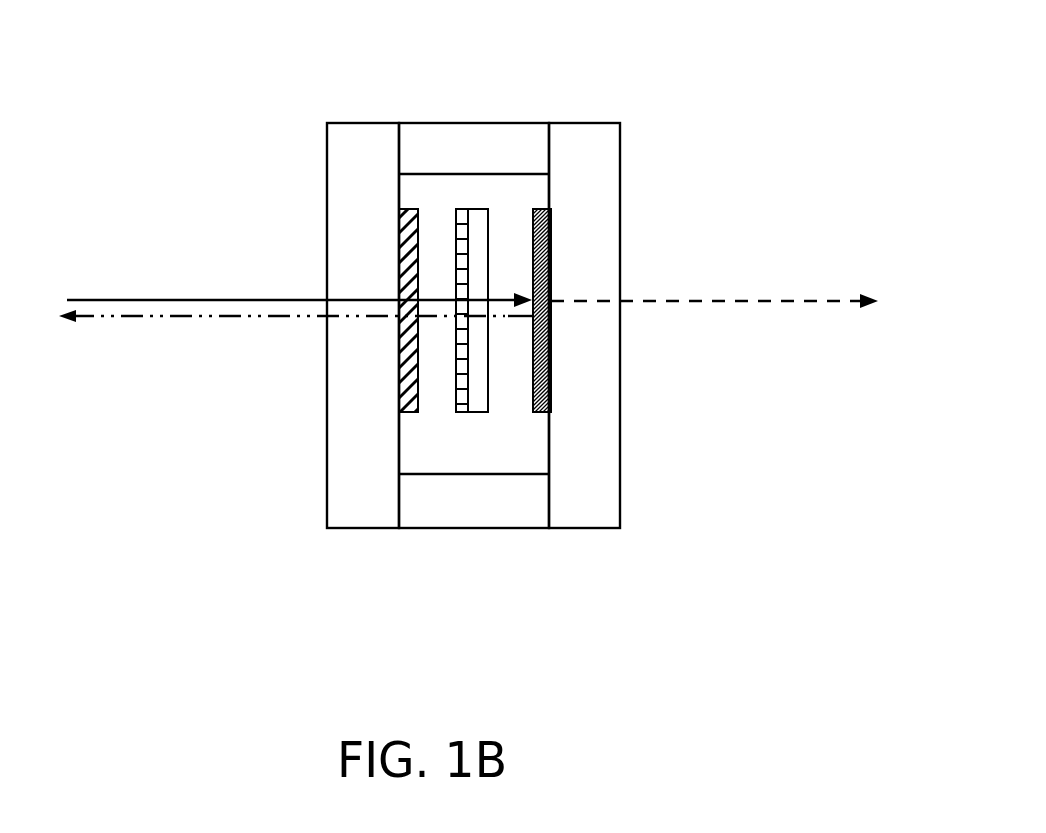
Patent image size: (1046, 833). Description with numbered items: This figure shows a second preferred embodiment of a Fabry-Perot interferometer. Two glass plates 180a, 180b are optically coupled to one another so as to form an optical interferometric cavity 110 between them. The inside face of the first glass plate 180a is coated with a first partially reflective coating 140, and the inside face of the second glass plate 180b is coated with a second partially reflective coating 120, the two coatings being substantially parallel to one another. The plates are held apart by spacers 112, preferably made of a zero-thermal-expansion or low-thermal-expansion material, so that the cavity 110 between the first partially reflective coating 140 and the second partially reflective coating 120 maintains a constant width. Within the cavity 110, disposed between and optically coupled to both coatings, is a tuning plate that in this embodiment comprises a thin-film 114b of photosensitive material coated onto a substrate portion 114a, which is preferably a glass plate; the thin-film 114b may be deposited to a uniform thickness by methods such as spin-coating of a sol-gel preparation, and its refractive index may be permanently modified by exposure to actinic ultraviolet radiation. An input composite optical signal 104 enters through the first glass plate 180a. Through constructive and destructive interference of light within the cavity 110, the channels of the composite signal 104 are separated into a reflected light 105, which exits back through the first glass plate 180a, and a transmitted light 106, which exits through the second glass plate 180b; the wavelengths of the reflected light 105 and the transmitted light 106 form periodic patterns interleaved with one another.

The input composite optical signal 104 is at (97, 299).
The reflected light 105 is at (92, 318).
The transmitted light 106 is at (797, 303).
The optical interferometric cavity 110 is at (445, 452).
The spacer 112 is at (415, 122).
The substrate portion 114a is at (482, 206).
The thin-film 114b is at (458, 413).
The second partially reflective coating 120 is at (540, 206).
The first partially reflective coating 140 is at (410, 412).
The first glass plate 180a is at (350, 122).
The second glass plate 180b is at (578, 122).